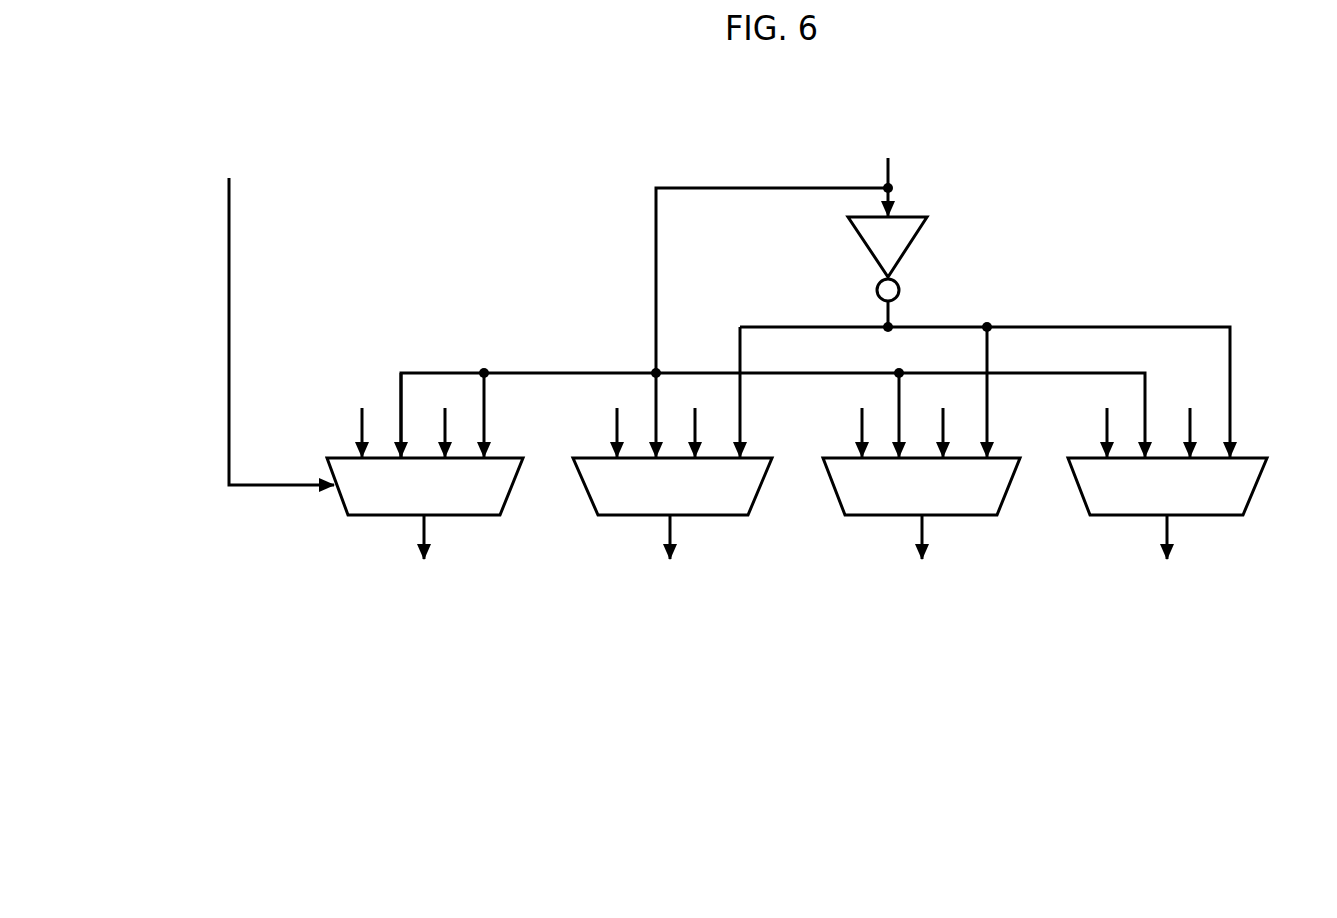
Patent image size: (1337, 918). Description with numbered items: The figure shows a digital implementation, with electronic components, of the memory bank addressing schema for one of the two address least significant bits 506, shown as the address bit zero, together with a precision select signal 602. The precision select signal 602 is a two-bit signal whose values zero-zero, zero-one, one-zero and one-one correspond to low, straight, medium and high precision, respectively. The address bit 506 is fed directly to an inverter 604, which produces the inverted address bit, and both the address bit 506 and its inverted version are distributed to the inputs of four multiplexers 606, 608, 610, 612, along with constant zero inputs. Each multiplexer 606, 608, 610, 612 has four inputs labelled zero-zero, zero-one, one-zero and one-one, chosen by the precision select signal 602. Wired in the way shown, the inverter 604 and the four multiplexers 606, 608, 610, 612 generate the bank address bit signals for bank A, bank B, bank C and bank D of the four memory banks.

The precision select signal 602 is at (284, 152).
The address LSB 506 is at (905, 160).
The inverter 604 is at (926, 260).
The MUX 606 is at (337, 506).
The MUX 608 is at (582, 510).
The MUX 610 is at (829, 507).
The MUX 612 is at (1241, 522).